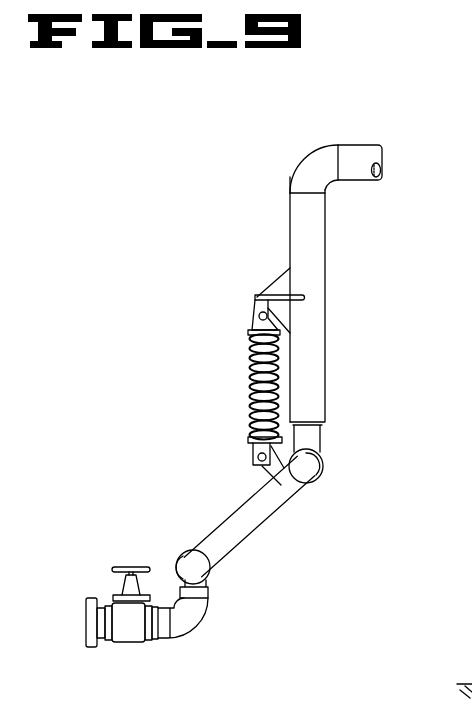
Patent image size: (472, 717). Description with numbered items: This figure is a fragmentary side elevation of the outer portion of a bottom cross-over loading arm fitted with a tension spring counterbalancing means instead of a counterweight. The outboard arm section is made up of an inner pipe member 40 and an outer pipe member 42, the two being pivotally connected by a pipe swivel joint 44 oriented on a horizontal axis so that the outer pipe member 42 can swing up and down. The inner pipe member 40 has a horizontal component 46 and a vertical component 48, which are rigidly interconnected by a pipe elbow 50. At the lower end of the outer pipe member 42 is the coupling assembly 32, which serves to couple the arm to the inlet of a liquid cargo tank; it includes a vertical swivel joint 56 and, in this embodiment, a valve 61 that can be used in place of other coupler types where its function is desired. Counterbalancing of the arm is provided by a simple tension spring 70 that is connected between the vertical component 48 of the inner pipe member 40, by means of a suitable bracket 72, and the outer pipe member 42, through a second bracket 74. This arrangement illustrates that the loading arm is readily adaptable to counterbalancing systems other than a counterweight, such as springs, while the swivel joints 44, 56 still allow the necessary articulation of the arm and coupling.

The coupling assembly 32 is at (199, 625).
The inner pipe member 40 is at (327, 226).
The outer pipe member 42 is at (257, 520).
The pipe swivel joint 44 is at (324, 465).
The horizontal component 46 is at (380, 156).
The vertical component 48 is at (314, 268).
The pipe elbow 50 is at (297, 171).
The vertical swivel joint 56 is at (208, 596).
The valve 61 is at (128, 638).
The tension spring 70 is at (250, 369).
The bracket 72 is at (255, 297).
The bracket 74 is at (258, 466).